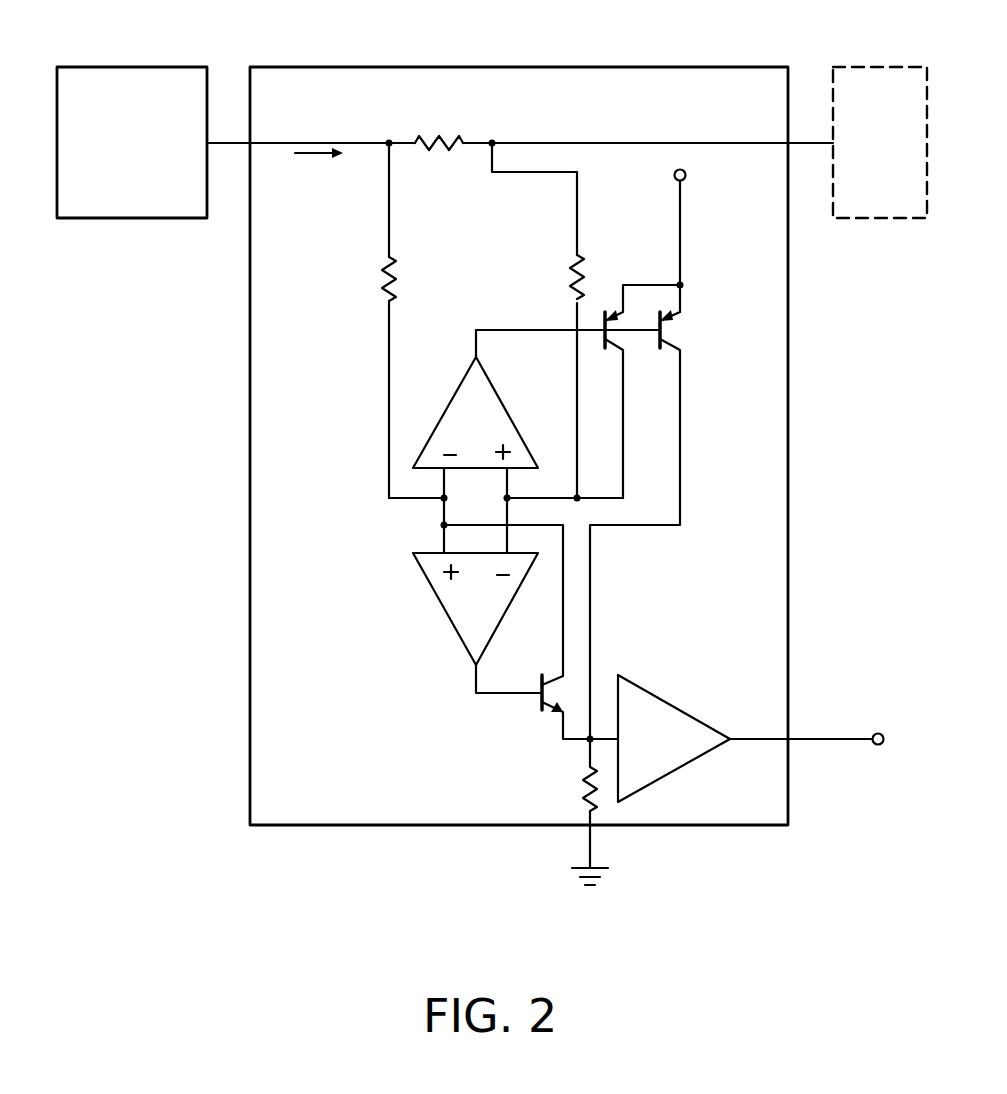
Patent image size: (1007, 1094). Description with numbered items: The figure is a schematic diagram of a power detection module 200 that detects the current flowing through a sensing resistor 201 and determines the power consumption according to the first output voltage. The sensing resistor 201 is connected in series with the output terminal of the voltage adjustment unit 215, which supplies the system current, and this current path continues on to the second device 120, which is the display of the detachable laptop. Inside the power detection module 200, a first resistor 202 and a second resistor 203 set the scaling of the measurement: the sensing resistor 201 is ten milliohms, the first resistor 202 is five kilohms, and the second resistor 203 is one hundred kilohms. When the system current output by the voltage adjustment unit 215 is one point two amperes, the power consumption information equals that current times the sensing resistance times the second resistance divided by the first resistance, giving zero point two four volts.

The voltage adjustment unit 215 is at (130, 66).
The power detection module 200 is at (517, 66).
The second device 120 is at (877, 66).
The sensing resistor 201 is at (437, 152).
The first resistor 202 is at (563, 284).
The second resistor 203 is at (580, 786).